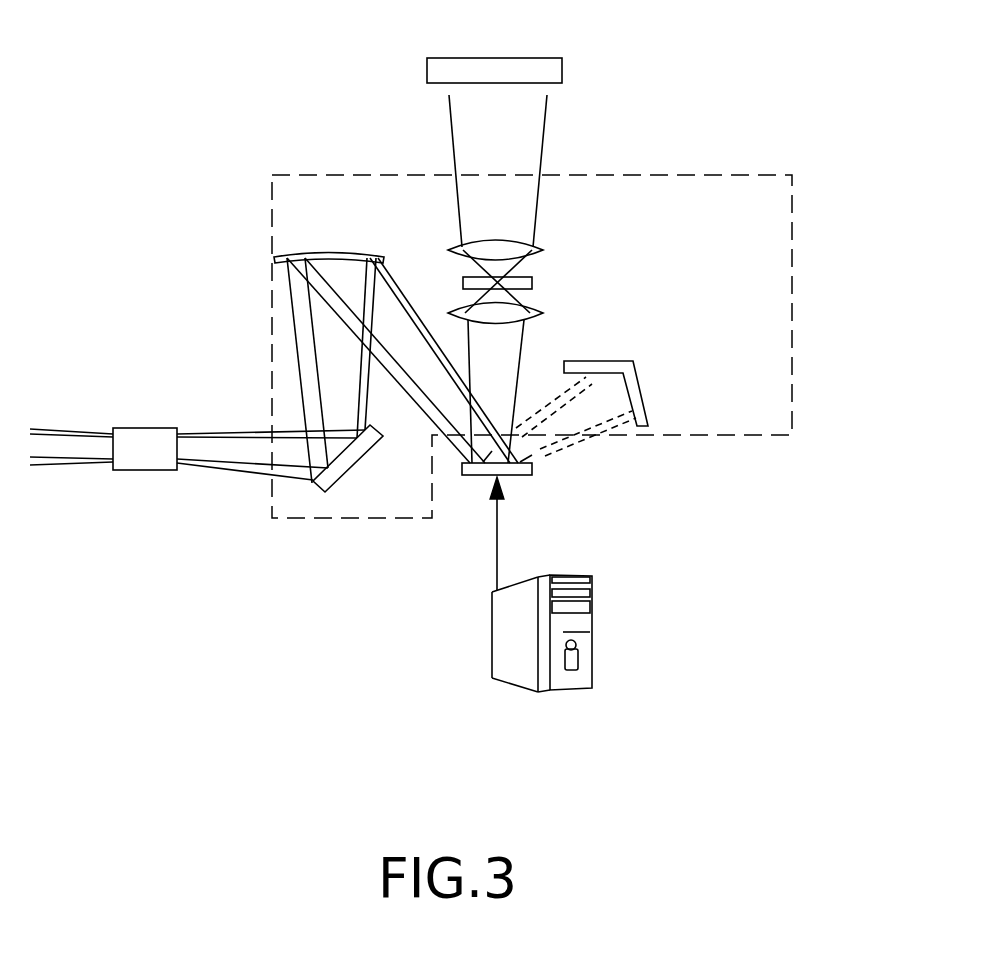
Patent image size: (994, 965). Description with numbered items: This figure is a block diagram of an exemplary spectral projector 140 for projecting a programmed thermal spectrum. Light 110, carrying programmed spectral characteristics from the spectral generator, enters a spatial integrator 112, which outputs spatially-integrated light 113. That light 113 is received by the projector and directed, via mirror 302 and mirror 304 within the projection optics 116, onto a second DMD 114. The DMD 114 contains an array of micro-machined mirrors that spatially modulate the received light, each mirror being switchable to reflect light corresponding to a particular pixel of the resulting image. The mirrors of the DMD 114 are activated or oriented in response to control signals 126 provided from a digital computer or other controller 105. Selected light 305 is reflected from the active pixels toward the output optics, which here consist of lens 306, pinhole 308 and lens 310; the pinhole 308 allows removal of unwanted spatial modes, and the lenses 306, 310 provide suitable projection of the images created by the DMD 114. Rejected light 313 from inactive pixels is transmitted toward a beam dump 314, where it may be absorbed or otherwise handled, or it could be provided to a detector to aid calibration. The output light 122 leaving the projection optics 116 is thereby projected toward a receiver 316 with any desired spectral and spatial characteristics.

The controller 105 is at (566, 671).
The light 110 is at (71, 489).
The spatial integrator 112 is at (151, 422).
The spatially-integrated light 113 is at (271, 490).
The second DMD 114 is at (542, 490).
The projection optics 116 is at (575, 346).
The output light 122 is at (516, 159).
The control signals 126 is at (545, 533).
The spectral projector 140 is at (741, 65).
The mirror 302 is at (365, 464).
The mirror 304 is at (329, 226).
The selected light 305 is at (521, 391).
The lens 306 is at (541, 311).
The pinhole 308 is at (540, 258).
The lens 310 is at (517, 224).
The rejected light 313 is at (597, 428).
The beam dump 314 is at (653, 393).
The receiver 316 is at (510, 45).